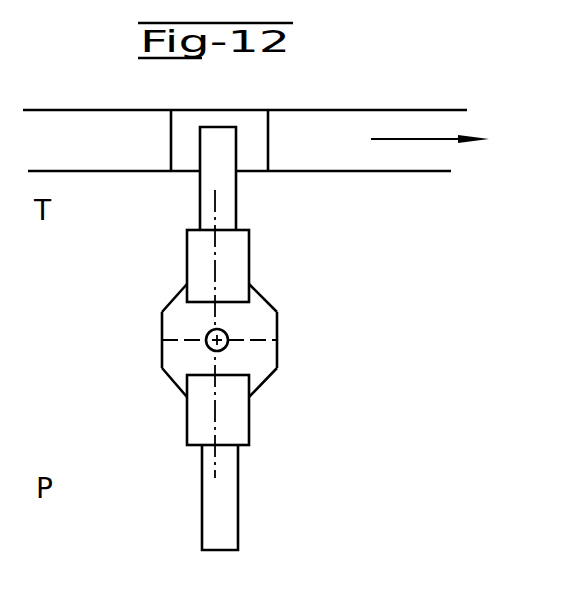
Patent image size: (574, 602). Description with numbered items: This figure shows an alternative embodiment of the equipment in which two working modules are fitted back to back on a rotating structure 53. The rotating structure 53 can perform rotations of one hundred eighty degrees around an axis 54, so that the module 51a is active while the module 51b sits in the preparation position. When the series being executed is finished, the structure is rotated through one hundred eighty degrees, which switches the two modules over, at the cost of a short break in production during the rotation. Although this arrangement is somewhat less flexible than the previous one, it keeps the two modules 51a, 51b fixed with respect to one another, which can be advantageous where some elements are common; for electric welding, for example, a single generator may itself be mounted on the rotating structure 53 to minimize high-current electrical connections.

The working module 51a is at (198, 258).
The working module 51b is at (235, 425).
The rotating structure 53 is at (188, 357).
The axis 54 is at (223, 332).